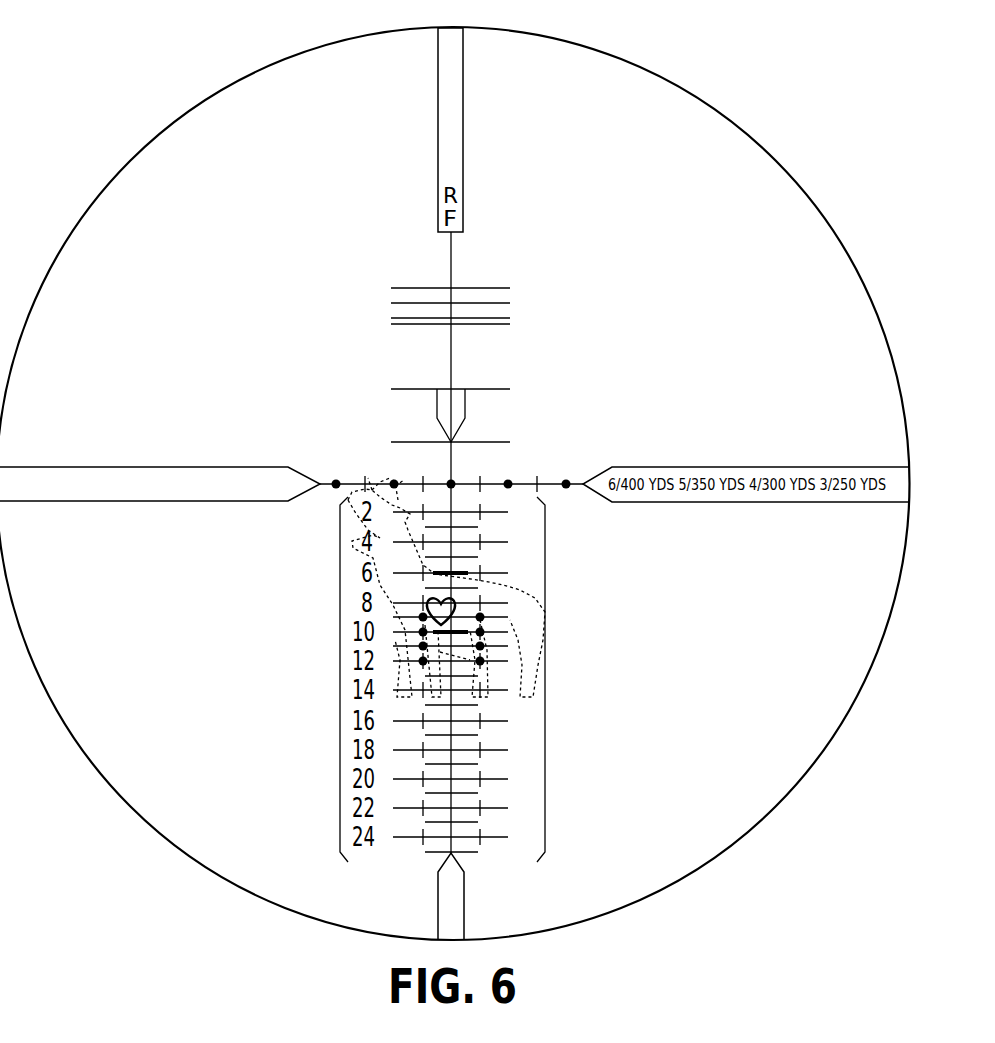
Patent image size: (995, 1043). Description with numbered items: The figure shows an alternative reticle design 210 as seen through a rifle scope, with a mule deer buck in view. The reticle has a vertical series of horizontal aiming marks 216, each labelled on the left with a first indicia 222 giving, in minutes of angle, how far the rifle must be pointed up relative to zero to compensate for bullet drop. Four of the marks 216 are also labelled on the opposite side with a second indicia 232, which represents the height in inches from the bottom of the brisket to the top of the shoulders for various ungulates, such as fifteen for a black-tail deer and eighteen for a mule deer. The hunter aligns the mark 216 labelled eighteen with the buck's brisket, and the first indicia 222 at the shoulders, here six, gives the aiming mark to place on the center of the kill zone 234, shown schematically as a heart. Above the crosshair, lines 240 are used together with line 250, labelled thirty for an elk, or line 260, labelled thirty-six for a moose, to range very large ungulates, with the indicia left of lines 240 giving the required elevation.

The reticle design 210 is at (766, 110).
The lines 240 is at (512, 280).
The line 250 is at (410, 389).
The line 260 is at (410, 442).
The first indicia 222 is at (340, 679).
The marks 216 is at (545, 680).
The second indicia 232 is at (532, 608).
The kill zone 234 is at (450, 598).